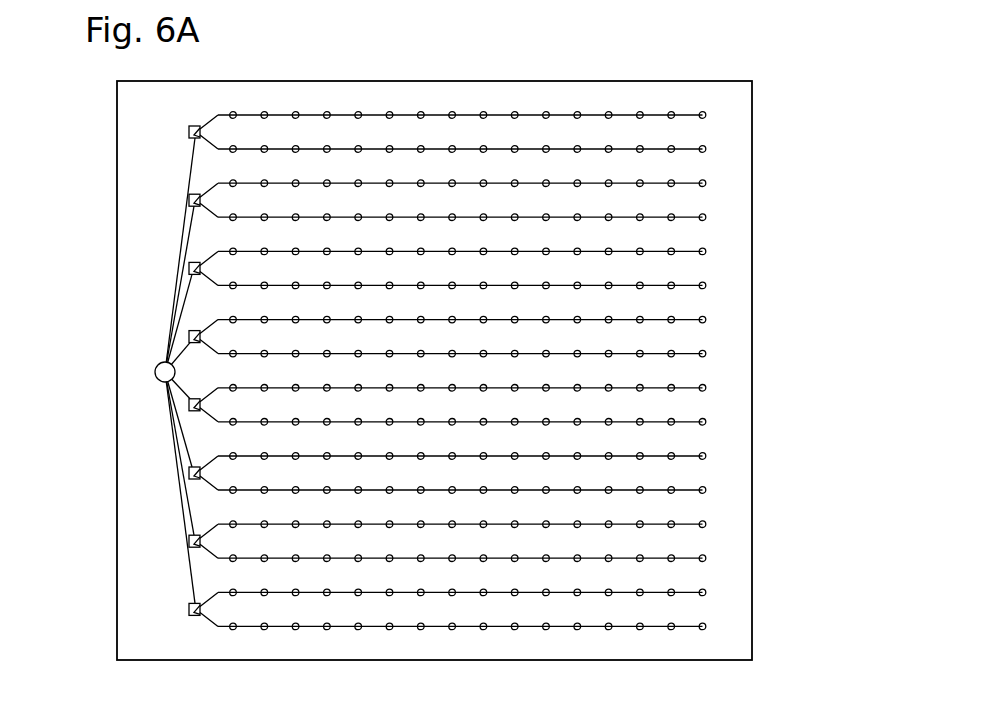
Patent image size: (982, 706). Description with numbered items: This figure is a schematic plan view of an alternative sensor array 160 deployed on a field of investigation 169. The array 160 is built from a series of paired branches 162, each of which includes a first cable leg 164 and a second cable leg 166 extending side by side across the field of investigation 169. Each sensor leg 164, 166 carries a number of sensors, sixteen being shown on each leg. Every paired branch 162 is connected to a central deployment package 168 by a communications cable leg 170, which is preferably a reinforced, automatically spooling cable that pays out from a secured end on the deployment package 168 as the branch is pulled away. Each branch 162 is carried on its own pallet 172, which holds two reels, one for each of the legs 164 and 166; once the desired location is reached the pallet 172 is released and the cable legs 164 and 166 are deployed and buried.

The sensor array 160 is at (772, 224).
The paired branch 162 is at (717, 114).
The first cable leg 164 is at (407, 115).
The second cable leg 166 is at (590, 149).
The central deployment package 168 is at (155, 372).
The field of investigation 169 is at (145, 641).
The communications cable leg 170 is at (190, 176).
The pallet 172 is at (189, 130).